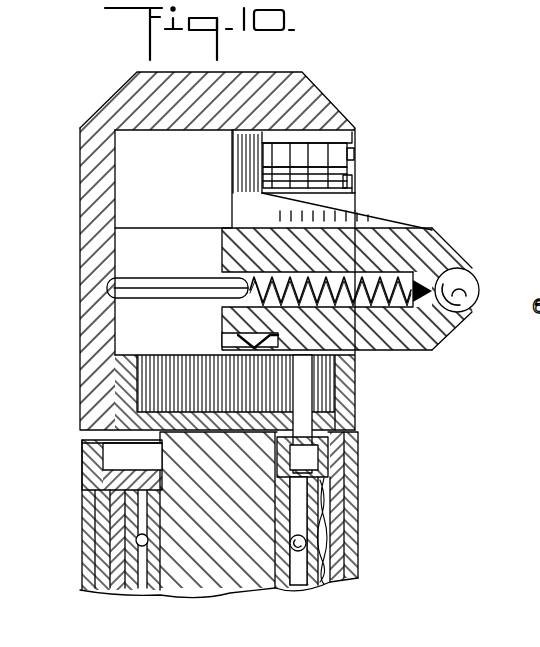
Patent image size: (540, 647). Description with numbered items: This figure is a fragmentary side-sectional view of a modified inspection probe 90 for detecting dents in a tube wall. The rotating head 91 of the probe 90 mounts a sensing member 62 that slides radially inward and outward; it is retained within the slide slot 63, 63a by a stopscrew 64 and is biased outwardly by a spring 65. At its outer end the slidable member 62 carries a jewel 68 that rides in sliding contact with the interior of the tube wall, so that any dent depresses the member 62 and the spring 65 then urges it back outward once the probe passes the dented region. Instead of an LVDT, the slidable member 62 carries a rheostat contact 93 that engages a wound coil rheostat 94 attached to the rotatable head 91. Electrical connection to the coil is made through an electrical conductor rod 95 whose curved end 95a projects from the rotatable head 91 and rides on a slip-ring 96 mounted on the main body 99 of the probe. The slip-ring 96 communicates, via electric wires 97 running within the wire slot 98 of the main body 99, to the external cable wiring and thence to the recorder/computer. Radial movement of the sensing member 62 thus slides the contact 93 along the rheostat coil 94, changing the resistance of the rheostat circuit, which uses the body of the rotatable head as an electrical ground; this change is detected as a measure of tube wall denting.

The probe 90 is at (237, 515).
The rotating head 91 is at (323, 102).
The slidable sensing member 62 is at (349, 278).
The slide slot 63 is at (128, 247).
The slide slot 63a is at (132, 175).
The stopscrew 64 is at (355, 152).
The spring 65 is at (327, 250).
The jewel 68 is at (468, 287).
The rheostat contact 93 is at (235, 340).
The wound coil rheostat 94 is at (198, 343).
The electrical conductor rod 95 is at (307, 390).
The curved end 95a is at (307, 467).
The slip-ring 96 is at (120, 487).
The electric wires 97 is at (308, 548).
The wire slot 98 is at (338, 518).
The main body 99 is at (353, 568).